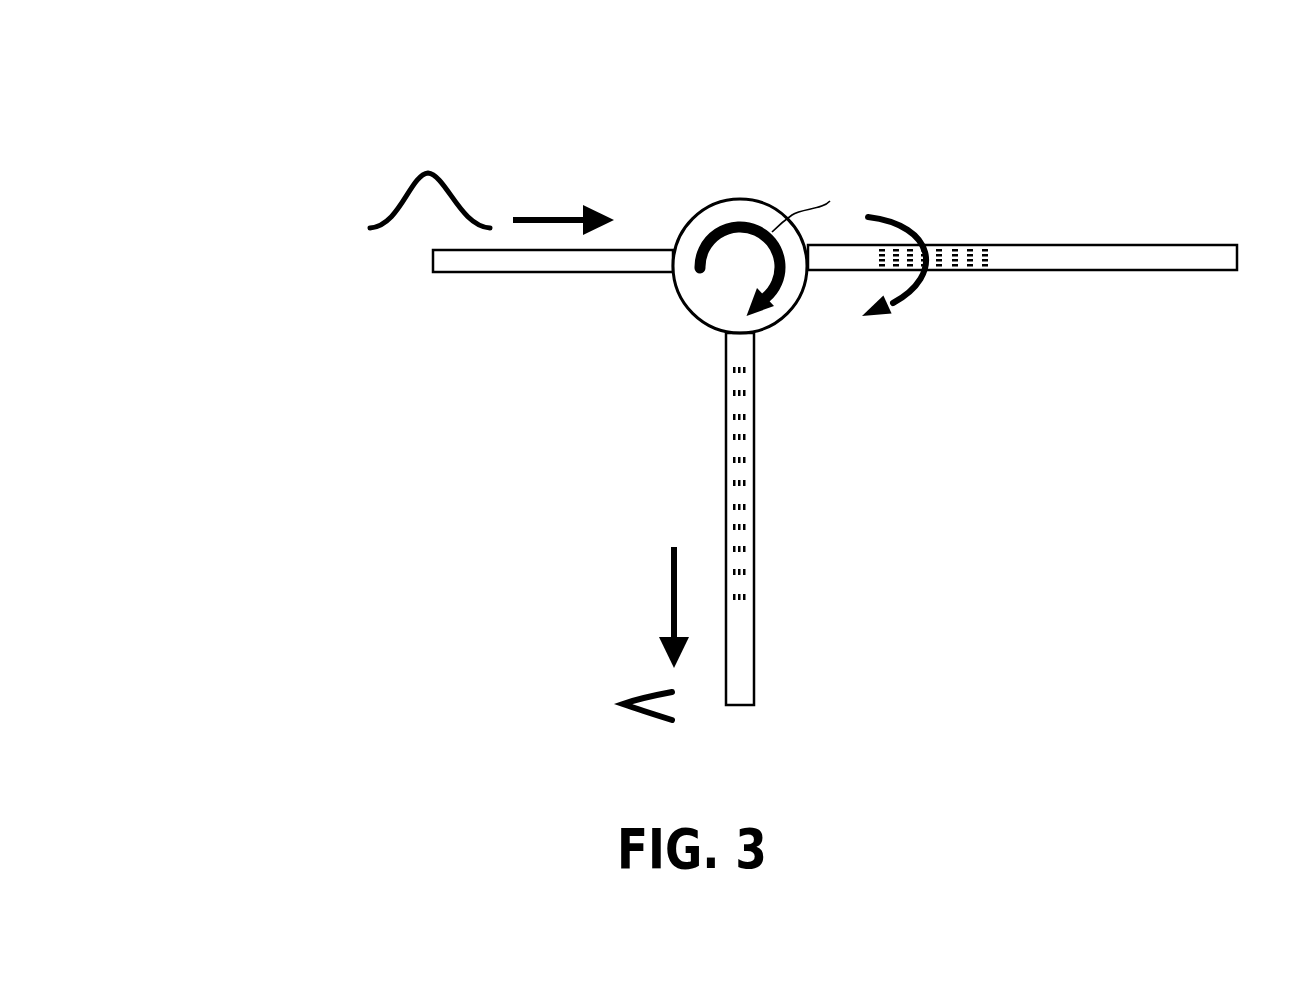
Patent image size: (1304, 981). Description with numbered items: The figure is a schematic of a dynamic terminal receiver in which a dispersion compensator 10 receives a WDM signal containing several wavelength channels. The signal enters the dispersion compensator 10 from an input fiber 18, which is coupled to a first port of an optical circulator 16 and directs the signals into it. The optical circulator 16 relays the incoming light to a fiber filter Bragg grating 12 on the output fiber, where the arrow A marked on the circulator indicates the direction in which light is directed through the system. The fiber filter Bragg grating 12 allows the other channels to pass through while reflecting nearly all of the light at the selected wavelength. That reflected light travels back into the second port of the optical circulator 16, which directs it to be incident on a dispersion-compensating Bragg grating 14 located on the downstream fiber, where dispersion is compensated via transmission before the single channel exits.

The dispersion compensator 10 is at (926, 80).
The fiber filter Bragg grating 12 is at (944, 247).
The dispersion-compensating Bragg grating 14 is at (723, 503).
The optical circulator 16 is at (692, 220).
The input fiber 18 is at (569, 272).